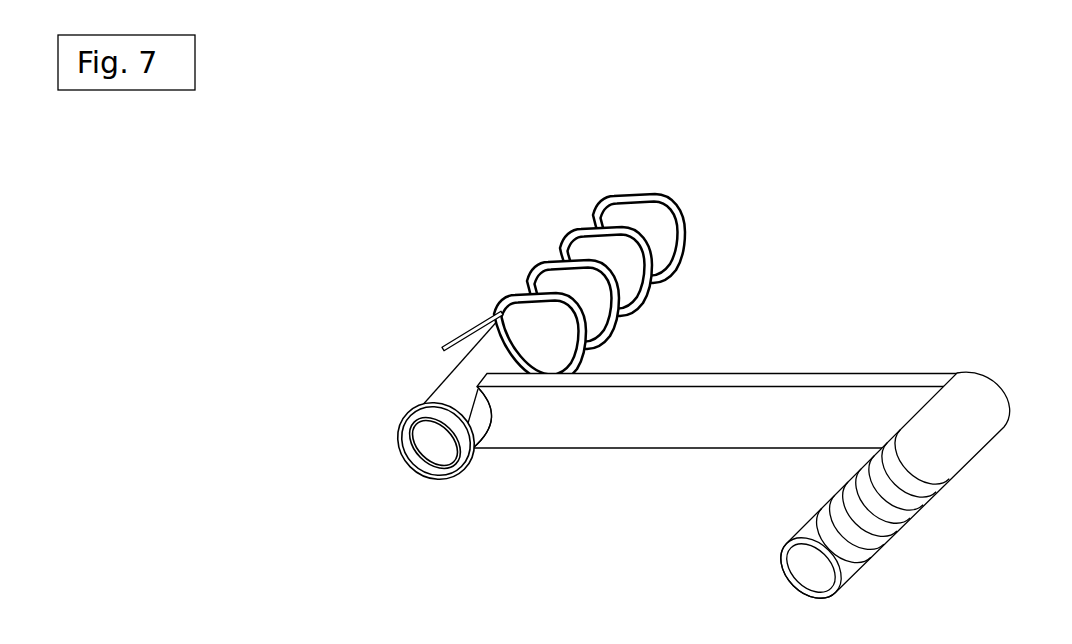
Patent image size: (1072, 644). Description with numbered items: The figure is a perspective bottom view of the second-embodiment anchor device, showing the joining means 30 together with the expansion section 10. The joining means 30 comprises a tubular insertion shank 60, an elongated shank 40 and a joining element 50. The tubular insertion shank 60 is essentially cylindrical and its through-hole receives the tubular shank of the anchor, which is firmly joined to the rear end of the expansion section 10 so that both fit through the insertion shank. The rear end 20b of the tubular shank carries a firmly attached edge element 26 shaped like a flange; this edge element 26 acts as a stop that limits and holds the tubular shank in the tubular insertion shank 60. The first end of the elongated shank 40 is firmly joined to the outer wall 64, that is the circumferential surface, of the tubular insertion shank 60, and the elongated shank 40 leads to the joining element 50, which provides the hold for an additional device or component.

The expansion section 10 is at (702, 198).
The joining means 30 is at (758, 421).
The elongated shank 40 is at (738, 413).
The joining element 50 is at (852, 560).
The tubular insertion shank 60 is at (452, 387).
The rear end 20b is at (406, 410).
The edge element 26 is at (417, 455).
The outer wall 64 is at (475, 425).